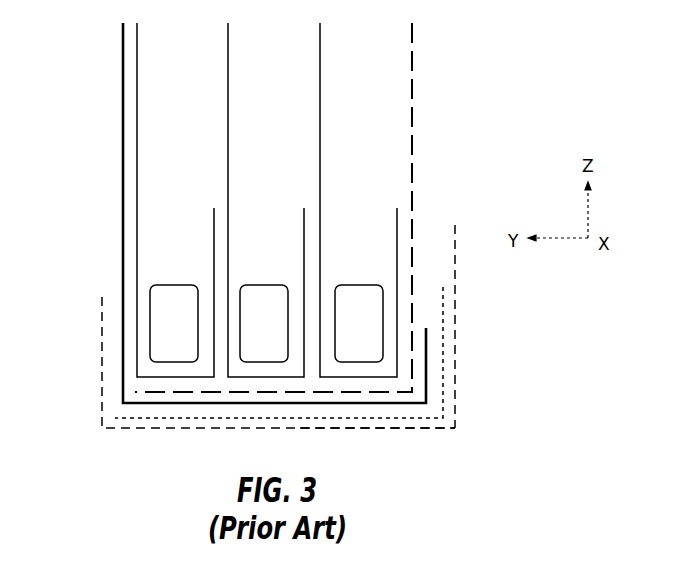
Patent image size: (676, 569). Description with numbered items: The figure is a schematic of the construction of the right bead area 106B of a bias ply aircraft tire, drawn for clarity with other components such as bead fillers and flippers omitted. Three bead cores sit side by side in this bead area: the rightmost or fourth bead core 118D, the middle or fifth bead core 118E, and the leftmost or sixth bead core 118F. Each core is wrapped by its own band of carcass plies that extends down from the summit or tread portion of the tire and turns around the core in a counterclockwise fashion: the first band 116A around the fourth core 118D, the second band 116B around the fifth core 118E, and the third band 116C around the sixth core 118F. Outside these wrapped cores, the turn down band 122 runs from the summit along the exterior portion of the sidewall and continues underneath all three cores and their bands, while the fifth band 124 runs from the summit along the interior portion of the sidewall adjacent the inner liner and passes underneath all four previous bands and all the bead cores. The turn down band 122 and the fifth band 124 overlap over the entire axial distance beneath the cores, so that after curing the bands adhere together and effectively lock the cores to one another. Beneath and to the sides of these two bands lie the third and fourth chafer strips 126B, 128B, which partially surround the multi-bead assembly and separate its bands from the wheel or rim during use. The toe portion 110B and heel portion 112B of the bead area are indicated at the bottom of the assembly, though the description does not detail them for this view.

The right bead area 106B is at (482, 292).
The substrate 110B is at (139, 431).
The lower layer 112B is at (456, 431).
The first band of carcass plies 116A is at (322, 110).
The second band of carcass plies 116B is at (230, 110).
The third band of carcass plies 116C is at (140, 110).
The fourth bead core 118D is at (368, 292).
The fifth bead core 118E is at (273, 292).
The sixth bead core 118F is at (183, 292).
The turn down band 122 is at (414, 140).
The fifth band 124 is at (122, 136).
The third chafer strip 126B is at (443, 405).
The fourth chafer strip 128B is at (455, 365).